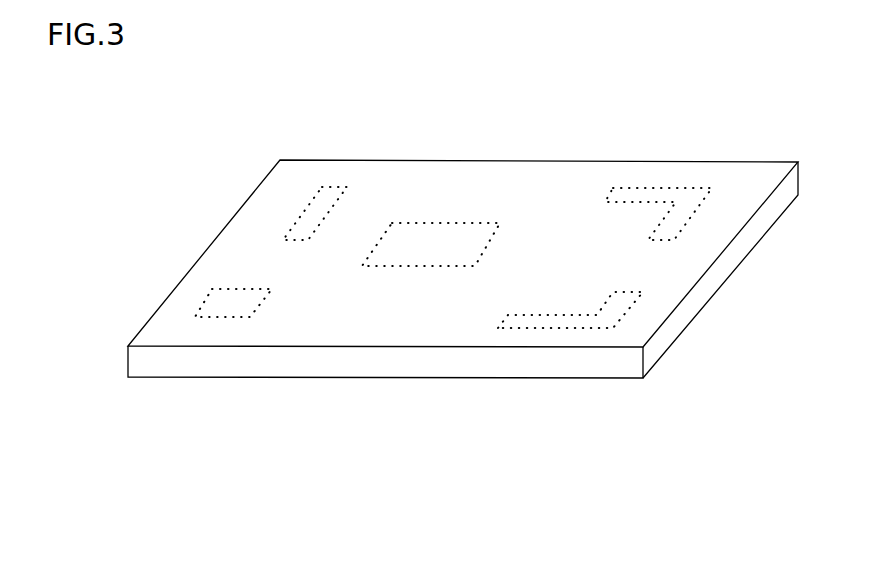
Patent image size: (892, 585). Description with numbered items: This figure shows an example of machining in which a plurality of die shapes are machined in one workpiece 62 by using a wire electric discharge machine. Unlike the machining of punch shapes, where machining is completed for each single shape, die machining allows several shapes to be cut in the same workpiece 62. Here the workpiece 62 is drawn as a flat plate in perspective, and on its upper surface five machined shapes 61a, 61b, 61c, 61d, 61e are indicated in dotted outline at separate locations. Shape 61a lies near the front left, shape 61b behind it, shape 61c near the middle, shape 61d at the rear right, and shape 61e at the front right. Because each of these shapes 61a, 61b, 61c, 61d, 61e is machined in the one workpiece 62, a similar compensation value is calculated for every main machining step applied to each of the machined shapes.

The substrate 62 is at (438, 323).
The conductive pattern 61a is at (213, 310).
The conductive pattern 61b is at (317, 210).
The conductive pattern 61c is at (428, 242).
The conductive pattern 61d is at (640, 195).
The conductive pattern 61e is at (620, 298).